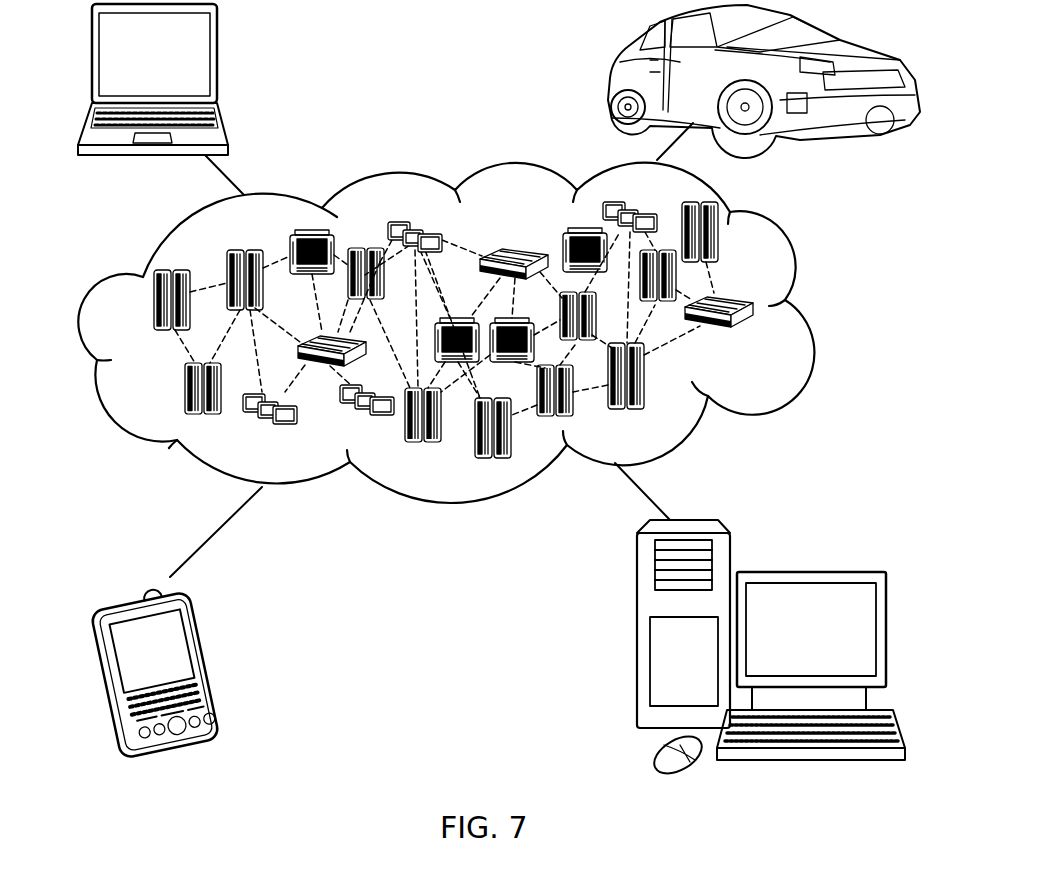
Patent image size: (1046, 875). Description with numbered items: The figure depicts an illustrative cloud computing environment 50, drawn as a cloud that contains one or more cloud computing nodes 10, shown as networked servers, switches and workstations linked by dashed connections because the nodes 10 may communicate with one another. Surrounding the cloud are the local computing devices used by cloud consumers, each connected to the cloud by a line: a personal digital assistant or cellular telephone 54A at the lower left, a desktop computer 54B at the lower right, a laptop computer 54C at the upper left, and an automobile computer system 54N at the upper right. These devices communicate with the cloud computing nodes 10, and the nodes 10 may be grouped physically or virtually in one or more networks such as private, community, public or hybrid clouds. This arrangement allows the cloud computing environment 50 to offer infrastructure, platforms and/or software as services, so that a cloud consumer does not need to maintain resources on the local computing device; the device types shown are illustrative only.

The cloud computing environment 50 is at (808, 308).
The cloud computing node 10 is at (762, 337).
The personal digital assistant or cellular telephone 54A is at (208, 656).
The desktop computer 54B is at (808, 571).
The laptop computer 54C is at (218, 62).
The automobile computer system 54N is at (607, 76).